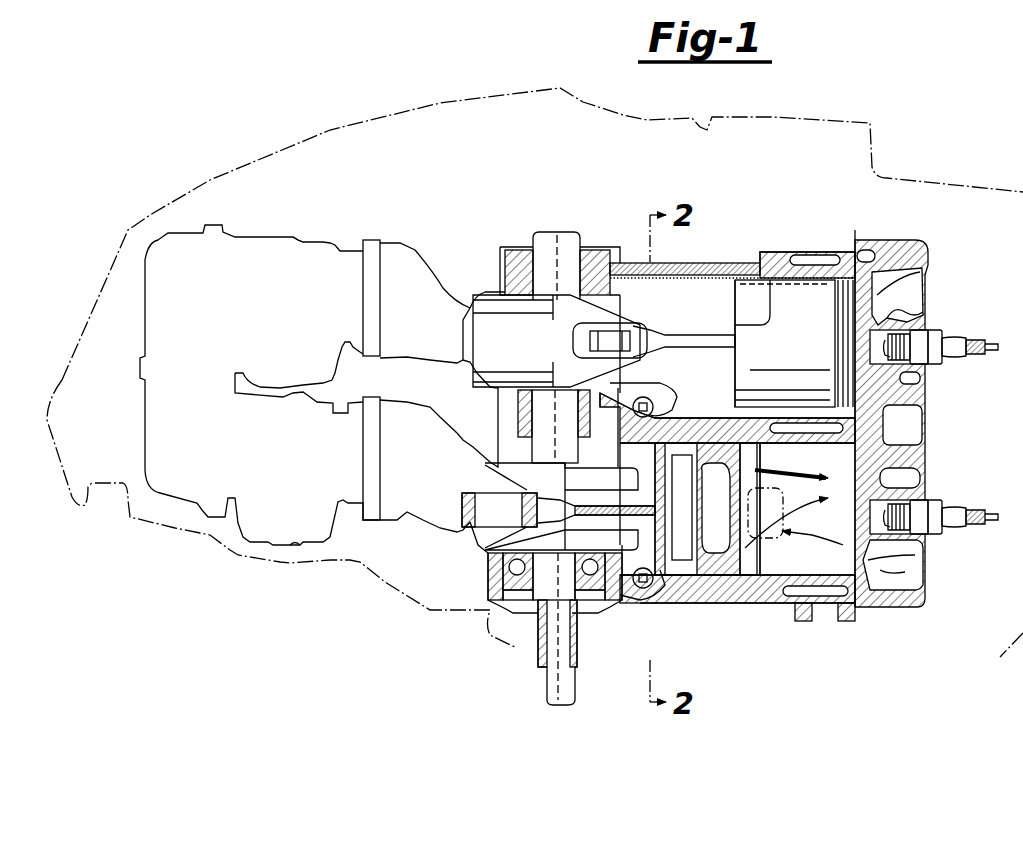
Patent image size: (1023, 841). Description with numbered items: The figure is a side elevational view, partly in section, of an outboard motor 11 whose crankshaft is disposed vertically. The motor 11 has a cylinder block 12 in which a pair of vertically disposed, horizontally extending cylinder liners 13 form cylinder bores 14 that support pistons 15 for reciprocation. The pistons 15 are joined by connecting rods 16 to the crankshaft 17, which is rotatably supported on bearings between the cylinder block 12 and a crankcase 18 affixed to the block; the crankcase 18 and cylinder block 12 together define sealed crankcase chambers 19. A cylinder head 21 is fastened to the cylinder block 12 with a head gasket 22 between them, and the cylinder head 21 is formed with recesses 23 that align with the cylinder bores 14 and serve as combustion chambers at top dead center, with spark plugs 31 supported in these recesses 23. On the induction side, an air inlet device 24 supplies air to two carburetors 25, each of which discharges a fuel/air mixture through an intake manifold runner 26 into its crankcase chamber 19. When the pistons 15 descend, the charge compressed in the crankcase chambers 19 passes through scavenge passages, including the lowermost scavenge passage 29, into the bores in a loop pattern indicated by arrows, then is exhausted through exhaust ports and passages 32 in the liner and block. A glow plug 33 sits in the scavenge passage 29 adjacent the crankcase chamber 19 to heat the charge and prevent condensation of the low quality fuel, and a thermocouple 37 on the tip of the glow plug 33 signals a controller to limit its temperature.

The motor 11 is at (828, 150).
The cylinder block 12 is at (778, 250).
The cylinder liners 13 is at (640, 262).
The cylinder bores 14 is at (718, 308).
The pistons 15 is at (895, 268).
The connecting rods 16 is at (687, 338).
The crankshaft 17 is at (564, 236).
The crankcase 18 is at (516, 250).
The crankcase chambers 19 is at (490, 300).
The cylinder head 21 is at (930, 250).
The head gasket 22 is at (856, 240).
The recesses 23 is at (908, 312).
The air inlet device 24 is at (168, 237).
The carburetors 25 is at (297, 252).
The intake manifold runners 26 is at (428, 272).
The scavenge passage 29 is at (745, 385).
The spark plugs 31 is at (955, 358).
The exhaust ports and passages 32 is at (778, 530).
The glow plug 33 is at (668, 395).
The thermocouple 37 is at (680, 415).